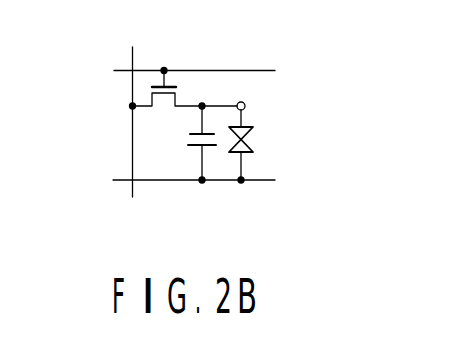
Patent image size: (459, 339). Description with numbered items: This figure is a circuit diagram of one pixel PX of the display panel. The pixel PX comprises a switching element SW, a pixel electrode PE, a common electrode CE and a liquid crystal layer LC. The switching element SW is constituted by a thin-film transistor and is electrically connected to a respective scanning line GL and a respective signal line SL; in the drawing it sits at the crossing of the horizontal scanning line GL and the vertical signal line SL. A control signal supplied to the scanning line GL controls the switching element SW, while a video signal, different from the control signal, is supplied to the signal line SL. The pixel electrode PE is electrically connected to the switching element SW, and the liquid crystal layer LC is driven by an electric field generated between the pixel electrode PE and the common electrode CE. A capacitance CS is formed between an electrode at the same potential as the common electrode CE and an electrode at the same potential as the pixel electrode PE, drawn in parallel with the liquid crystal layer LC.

The scanning line GL is at (141, 70).
The signal line SL is at (132, 143).
The switching element SW is at (182, 92).
The pixel electrode PE is at (245, 106).
The liquid crystal layer LC is at (257, 140).
The capacitance CS is at (191, 149).
The common electrode CE is at (262, 180).
The pixel PX is at (197, 139).